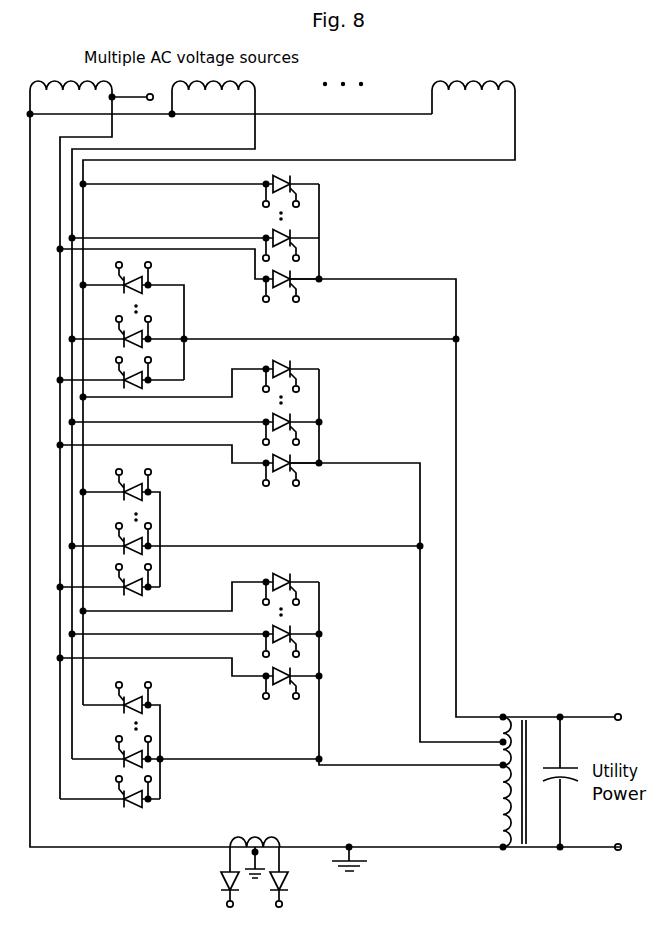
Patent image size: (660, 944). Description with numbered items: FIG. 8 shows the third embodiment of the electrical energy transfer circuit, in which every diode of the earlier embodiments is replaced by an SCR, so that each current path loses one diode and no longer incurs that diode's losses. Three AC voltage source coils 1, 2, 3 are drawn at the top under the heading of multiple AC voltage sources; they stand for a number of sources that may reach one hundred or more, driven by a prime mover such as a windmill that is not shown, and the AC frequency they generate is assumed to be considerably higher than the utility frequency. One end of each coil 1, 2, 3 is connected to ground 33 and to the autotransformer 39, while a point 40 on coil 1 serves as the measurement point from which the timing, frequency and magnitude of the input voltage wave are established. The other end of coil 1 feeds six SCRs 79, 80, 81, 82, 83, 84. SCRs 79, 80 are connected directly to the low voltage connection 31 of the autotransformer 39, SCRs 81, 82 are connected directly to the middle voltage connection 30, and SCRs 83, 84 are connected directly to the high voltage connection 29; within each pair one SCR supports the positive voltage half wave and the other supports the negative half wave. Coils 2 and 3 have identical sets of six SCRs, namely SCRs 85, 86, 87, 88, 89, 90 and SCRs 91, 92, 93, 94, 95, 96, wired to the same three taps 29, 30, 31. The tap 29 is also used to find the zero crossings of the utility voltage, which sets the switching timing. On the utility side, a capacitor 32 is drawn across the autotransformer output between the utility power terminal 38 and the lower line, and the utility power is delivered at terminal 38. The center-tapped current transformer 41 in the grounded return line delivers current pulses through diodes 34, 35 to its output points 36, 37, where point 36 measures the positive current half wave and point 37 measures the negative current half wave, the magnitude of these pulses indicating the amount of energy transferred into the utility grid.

The coil 1 is at (69, 88).
The coil 2 is at (209, 88).
The coil 3 is at (467, 88).
The point of coil 1 40 is at (148, 94).
The high voltage tap 29 is at (503, 716).
The middle voltage tap 30 is at (503, 741).
The low voltage tap 31 is at (503, 764).
The capacitor 32 is at (566, 769).
The ground 33 is at (366, 863).
The diode 34 is at (222, 883).
The diode 35 is at (287, 882).
The point of the current transformer 36 is at (228, 907).
The point of the current transformer 37 is at (277, 907).
The utility power terminal 38 is at (620, 714).
The autotransformer 39 is at (528, 808).
The current transformer 41 is at (255, 840).
The SCR 79 is at (121, 798).
The SCR 80 is at (291, 678).
The SCR 81 is at (121, 586).
The SCR 82 is at (291, 465).
The SCR 83 is at (121, 379).
The SCR 84 is at (291, 281).
The SCR 85 is at (121, 758).
The SCR 86 is at (291, 636).
The SCR 87 is at (121, 545).
The SCR 88 is at (291, 424).
The SCR 89 is at (121, 338).
The SCR 90 is at (291, 240).
The SCR 91 is at (121, 704).
The SCR 92 is at (291, 584).
The SCR 93 is at (121, 491).
The SCR 94 is at (291, 371).
The SCR 95 is at (121, 284).
The SCR 96 is at (291, 186).